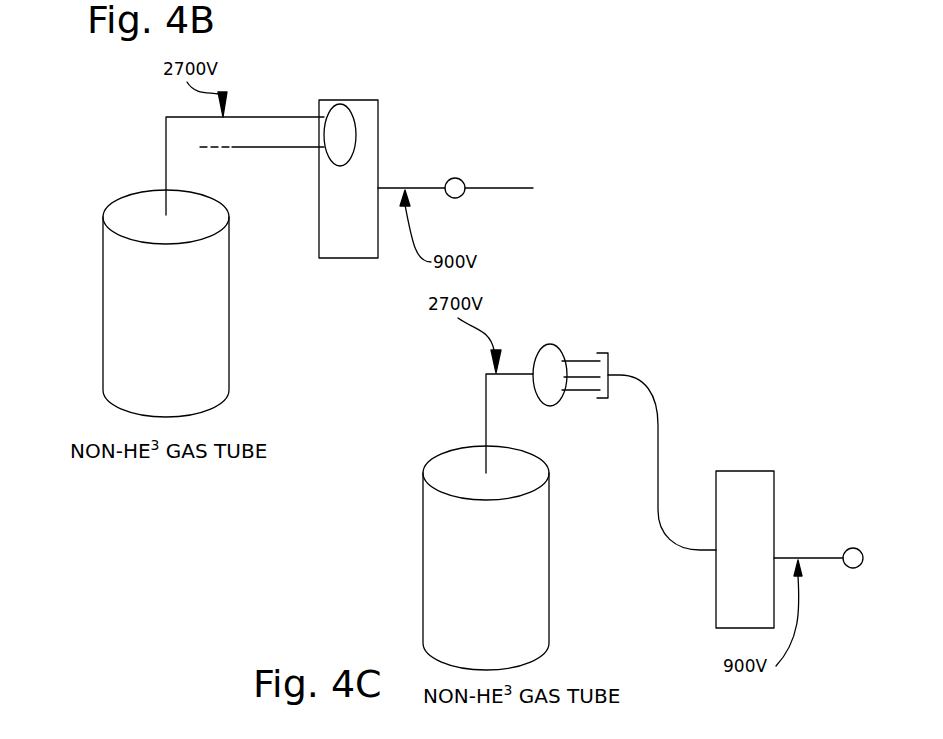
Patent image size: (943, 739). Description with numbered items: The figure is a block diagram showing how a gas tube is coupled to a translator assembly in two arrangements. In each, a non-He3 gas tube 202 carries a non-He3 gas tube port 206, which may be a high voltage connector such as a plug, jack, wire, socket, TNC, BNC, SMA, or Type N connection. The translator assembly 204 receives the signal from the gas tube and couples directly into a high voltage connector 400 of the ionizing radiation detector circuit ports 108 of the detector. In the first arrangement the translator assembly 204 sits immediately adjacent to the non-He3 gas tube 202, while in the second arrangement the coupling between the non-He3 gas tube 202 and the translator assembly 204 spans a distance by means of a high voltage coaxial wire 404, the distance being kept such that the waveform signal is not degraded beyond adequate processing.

In FIG. 4B, the non-He3 gas tube 202 is at (103, 312).
In FIG. 4C, the non-He3 gas tube 202 is at (423, 568).
In FIG. 4B, the translator assembly 204 is at (373, 100).
In FIG. 4C, the translator assembly 204 is at (745, 471).
In FIG. 4B, the non-He3 gas tube port 206 is at (298, 117).
In FIG. 4C, the non-He3 gas tube port 206 is at (552, 344).
In FIG. 4B, the high voltage connector 400 is at (343, 118).
In FIG. 4C, the high voltage connector 400 is at (847, 552).
In FIG. 4C, the high voltage coaxial wire 404 is at (660, 418).
In FIG. 4B, the ionizing radiation detector circuit ports 108 is at (456, 178).
In FIG. 4C, the ionizing radiation detector circuit ports 108 is at (853, 568).